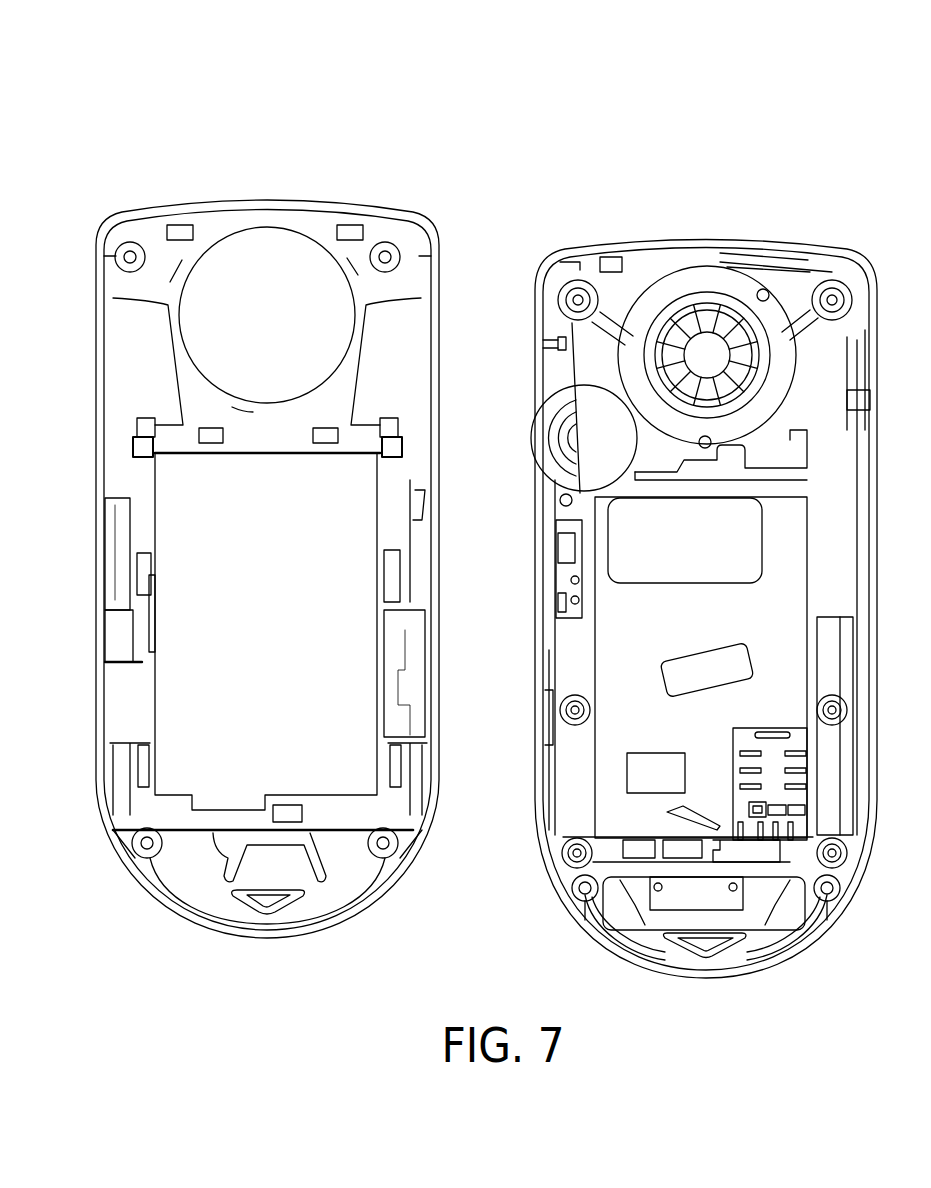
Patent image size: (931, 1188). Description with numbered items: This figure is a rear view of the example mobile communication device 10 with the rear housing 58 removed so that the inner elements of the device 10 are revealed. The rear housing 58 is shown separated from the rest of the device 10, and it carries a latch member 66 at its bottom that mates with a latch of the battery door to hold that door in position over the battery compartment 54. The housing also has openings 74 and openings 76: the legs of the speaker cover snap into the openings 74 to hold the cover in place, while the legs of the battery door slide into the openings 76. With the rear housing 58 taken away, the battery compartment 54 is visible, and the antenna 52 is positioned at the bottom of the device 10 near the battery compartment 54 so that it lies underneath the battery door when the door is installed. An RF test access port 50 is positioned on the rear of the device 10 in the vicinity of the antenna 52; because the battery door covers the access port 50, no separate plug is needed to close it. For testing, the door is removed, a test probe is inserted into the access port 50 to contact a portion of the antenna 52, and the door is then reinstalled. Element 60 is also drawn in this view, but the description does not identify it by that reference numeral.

The mobile communication device 10 is at (758, 73).
The RF test access port 50 is at (228, 843).
The antenna 52 is at (762, 890).
The battery compartment 54 is at (795, 622).
The rear housing 58 is at (96, 396).
The fan 60 is at (695, 310).
The latch member 66 is at (287, 863).
The openings 74 is at (180, 225).
The openings 76 is at (132, 450).